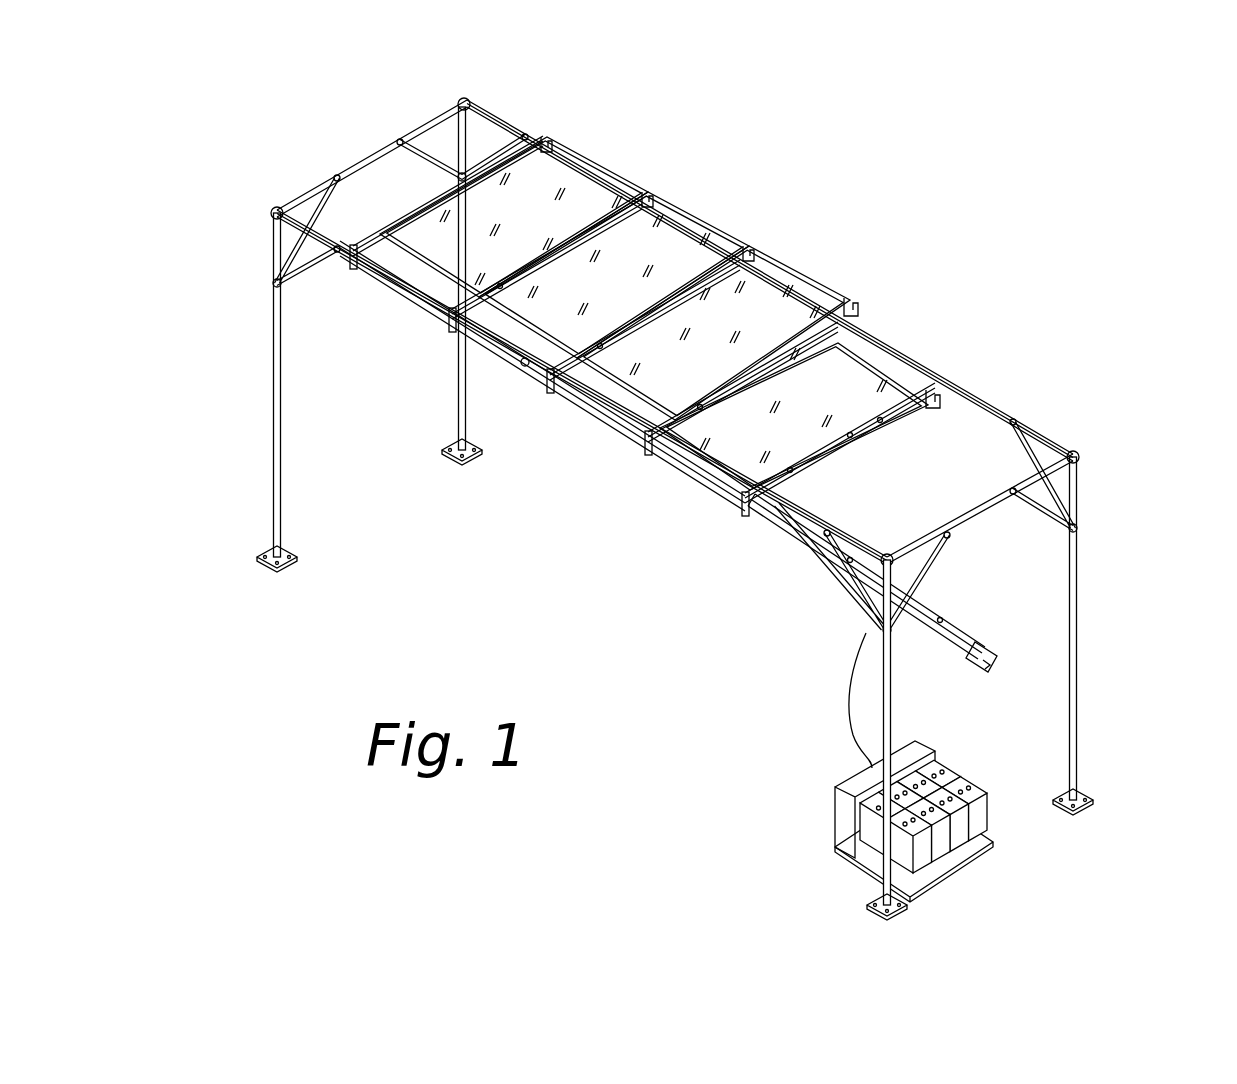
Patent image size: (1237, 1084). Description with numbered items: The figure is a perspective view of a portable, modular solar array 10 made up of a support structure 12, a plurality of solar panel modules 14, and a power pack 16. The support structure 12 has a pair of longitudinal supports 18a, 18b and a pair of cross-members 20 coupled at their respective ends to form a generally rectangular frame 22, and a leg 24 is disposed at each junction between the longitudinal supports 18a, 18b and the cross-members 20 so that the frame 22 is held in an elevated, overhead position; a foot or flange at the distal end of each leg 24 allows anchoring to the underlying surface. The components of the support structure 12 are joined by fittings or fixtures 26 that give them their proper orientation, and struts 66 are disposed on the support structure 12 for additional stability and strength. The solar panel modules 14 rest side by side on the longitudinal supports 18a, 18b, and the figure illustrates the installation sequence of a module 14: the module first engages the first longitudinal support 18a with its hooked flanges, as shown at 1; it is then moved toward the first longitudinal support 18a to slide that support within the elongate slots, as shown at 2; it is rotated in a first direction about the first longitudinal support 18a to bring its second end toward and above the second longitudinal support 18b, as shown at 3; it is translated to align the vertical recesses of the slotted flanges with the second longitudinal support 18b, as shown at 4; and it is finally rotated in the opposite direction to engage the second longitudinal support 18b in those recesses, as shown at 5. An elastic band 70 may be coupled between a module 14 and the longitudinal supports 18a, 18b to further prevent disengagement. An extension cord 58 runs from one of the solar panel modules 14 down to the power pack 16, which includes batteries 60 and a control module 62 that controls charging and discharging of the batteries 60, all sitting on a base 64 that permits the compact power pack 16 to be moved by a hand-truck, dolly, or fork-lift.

The first installation step 1 is at (828, 500).
The second installation step 2 is at (770, 437).
The third installation step 3 is at (967, 372).
The fourth installation step 4 is at (757, 306).
The fifth installation step 5 is at (853, 287).
The portable, modular solar array 10 is at (1143, 417).
The support structure 12 is at (1082, 557).
The solar panel module 14 is at (622, 165).
The power pack 16 is at (1003, 828).
The first longitudinal support 18a is at (598, 392).
The second longitudinal support 18b is at (1035, 433).
The cross-member 20 is at (362, 165).
The frame 22 is at (983, 402).
The leg 24 is at (275, 497).
The fitting or fixture 26 is at (270, 213).
The extension cord 58 is at (858, 688).
The battery 60 is at (977, 806).
The control module 62 is at (835, 818).
The base 64 is at (913, 893).
The strut 66 is at (427, 158).
The elastic band 70 is at (525, 364).